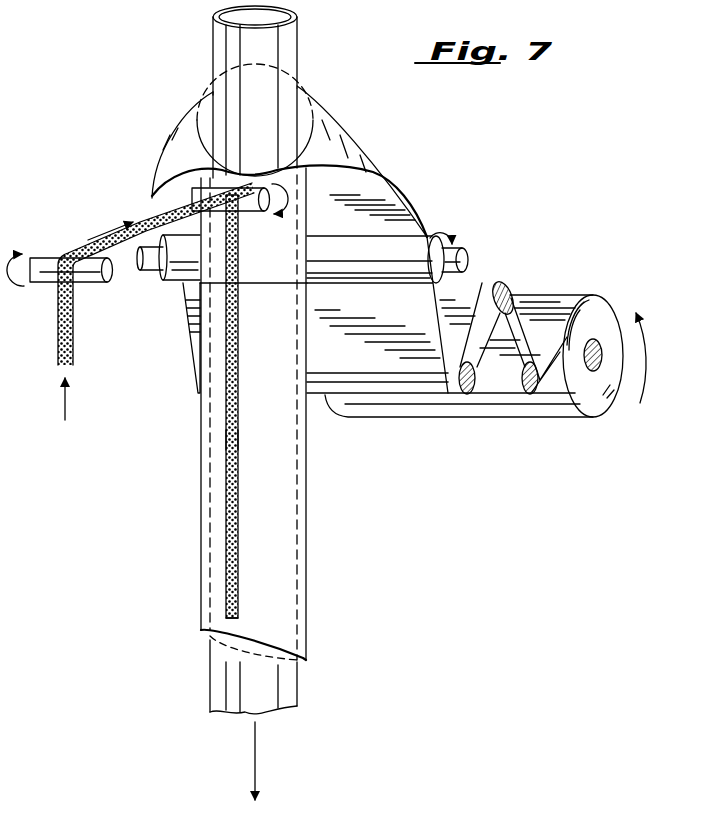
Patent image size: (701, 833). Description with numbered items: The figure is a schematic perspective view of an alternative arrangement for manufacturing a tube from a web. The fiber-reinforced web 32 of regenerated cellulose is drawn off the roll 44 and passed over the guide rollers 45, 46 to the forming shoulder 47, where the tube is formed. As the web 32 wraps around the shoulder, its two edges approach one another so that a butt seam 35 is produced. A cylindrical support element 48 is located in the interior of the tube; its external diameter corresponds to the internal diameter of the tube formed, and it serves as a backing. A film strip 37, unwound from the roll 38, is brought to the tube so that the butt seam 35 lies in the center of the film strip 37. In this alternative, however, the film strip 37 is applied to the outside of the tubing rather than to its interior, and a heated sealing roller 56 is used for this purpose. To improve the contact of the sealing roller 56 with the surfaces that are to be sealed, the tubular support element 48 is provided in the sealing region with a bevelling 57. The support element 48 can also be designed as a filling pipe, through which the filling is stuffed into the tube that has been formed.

The fiber-reinforced web 32 is at (385, 368).
The butt seam 35 is at (232, 440).
The film strip 37 is at (58, 330).
The roll 38 is at (94, 273).
The roll 44 is at (604, 306).
The guide roller 45 is at (453, 249).
The guide roller 46 is at (467, 394).
The forming shoulder 47 is at (346, 137).
The support element 48 is at (218, 62).
The sealing roller 56 is at (251, 212).
The bevelling 57 is at (232, 38).